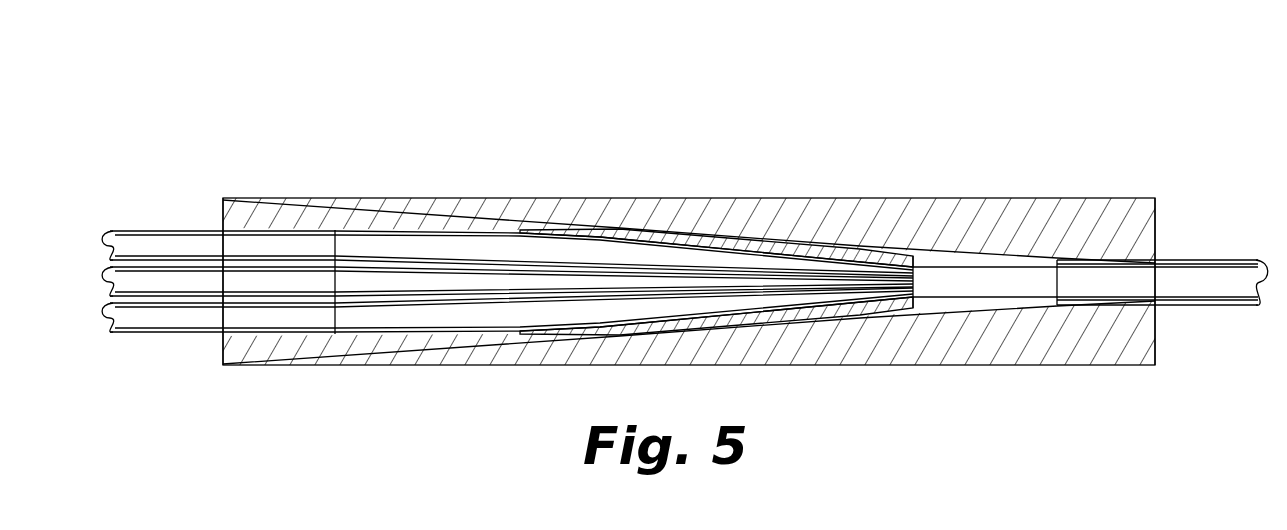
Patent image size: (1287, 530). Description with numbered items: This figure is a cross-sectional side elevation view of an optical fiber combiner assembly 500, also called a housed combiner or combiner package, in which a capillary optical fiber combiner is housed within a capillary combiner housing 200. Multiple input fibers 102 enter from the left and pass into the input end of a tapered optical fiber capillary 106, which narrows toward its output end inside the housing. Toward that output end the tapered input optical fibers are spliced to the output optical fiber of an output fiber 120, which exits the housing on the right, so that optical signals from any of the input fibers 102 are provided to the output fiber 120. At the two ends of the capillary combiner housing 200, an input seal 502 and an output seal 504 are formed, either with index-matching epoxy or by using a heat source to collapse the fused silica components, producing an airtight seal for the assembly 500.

The input fibers 102 is at (92, 320).
The tapered optical fiber capillary 106 is at (302, 215).
The output fiber 120 is at (1212, 282).
The capillary combiner housing 200 is at (820, 197).
The optical fiber combiner assembly 500 is at (1007, 82).
The input seal 502 is at (258, 363).
The output seal 504 is at (1155, 307).